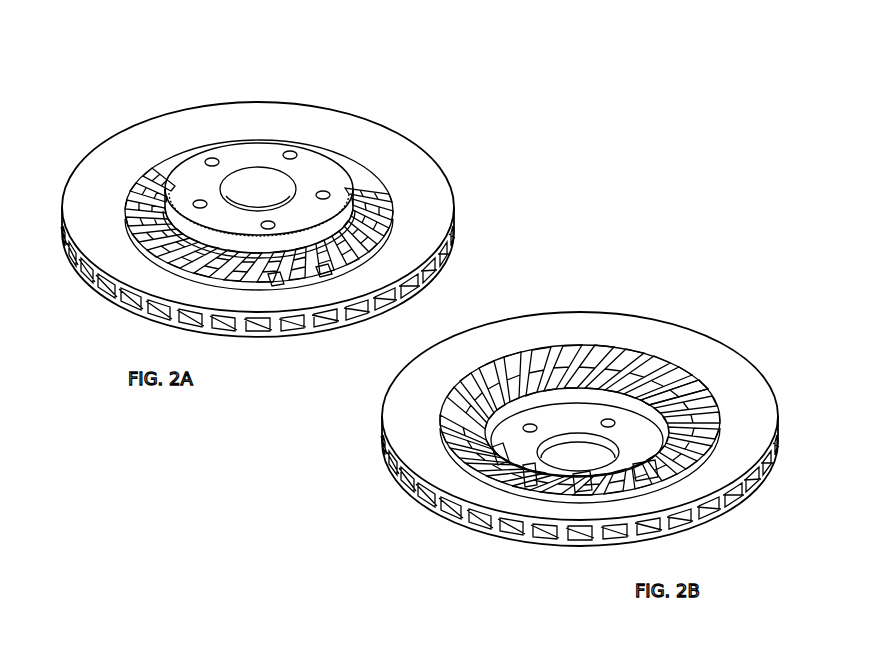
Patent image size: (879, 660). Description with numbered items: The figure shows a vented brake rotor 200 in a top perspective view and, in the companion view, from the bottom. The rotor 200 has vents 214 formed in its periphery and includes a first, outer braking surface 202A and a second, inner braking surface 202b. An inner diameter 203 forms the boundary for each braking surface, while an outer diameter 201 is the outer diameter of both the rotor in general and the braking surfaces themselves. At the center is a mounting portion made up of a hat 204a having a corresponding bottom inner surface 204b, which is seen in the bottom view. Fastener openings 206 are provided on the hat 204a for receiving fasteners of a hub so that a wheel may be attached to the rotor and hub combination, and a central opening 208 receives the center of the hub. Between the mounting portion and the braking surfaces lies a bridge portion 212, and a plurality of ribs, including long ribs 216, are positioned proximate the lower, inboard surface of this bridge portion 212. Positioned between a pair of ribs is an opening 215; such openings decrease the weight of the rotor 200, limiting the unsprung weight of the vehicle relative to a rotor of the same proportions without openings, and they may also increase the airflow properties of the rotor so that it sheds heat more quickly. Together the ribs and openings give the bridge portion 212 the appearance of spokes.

In FIG. 2B, the rotor 200 is at (603, 440).
In FIG. 2A, the outer diameter 201 is at (443, 177).
In FIG. 2B, the outer diameter 201 is at (756, 370).
In FIG. 2A, the first (outer) braking surface 202A is at (93, 183).
In FIG. 2B, the second (inner) braking surface 202b is at (624, 327).
In FIG. 2A, the inner diameter 203 is at (180, 149).
In FIG. 2B, the inner diameter 203 is at (537, 350).
In FIG. 2A, the hat 204a is at (245, 153).
In FIG. 2B, the bottom inner surface 204b is at (577, 432).
In FIG. 2A, the fastener openings 206 is at (297, 152).
In FIG. 2A, the opening 208 is at (275, 199).
In FIG. 2A, the bridge portion 212 is at (373, 183).
In FIG. 2A, the vents 214 is at (110, 290).
In FIG. 2B, the vents 214 is at (470, 517).
In FIG. 2B, the opening 215 is at (649, 387).
In FIG. 2A, the long ribs 216 is at (323, 275).
In FIG. 2B, the long ribs 216 is at (503, 470).